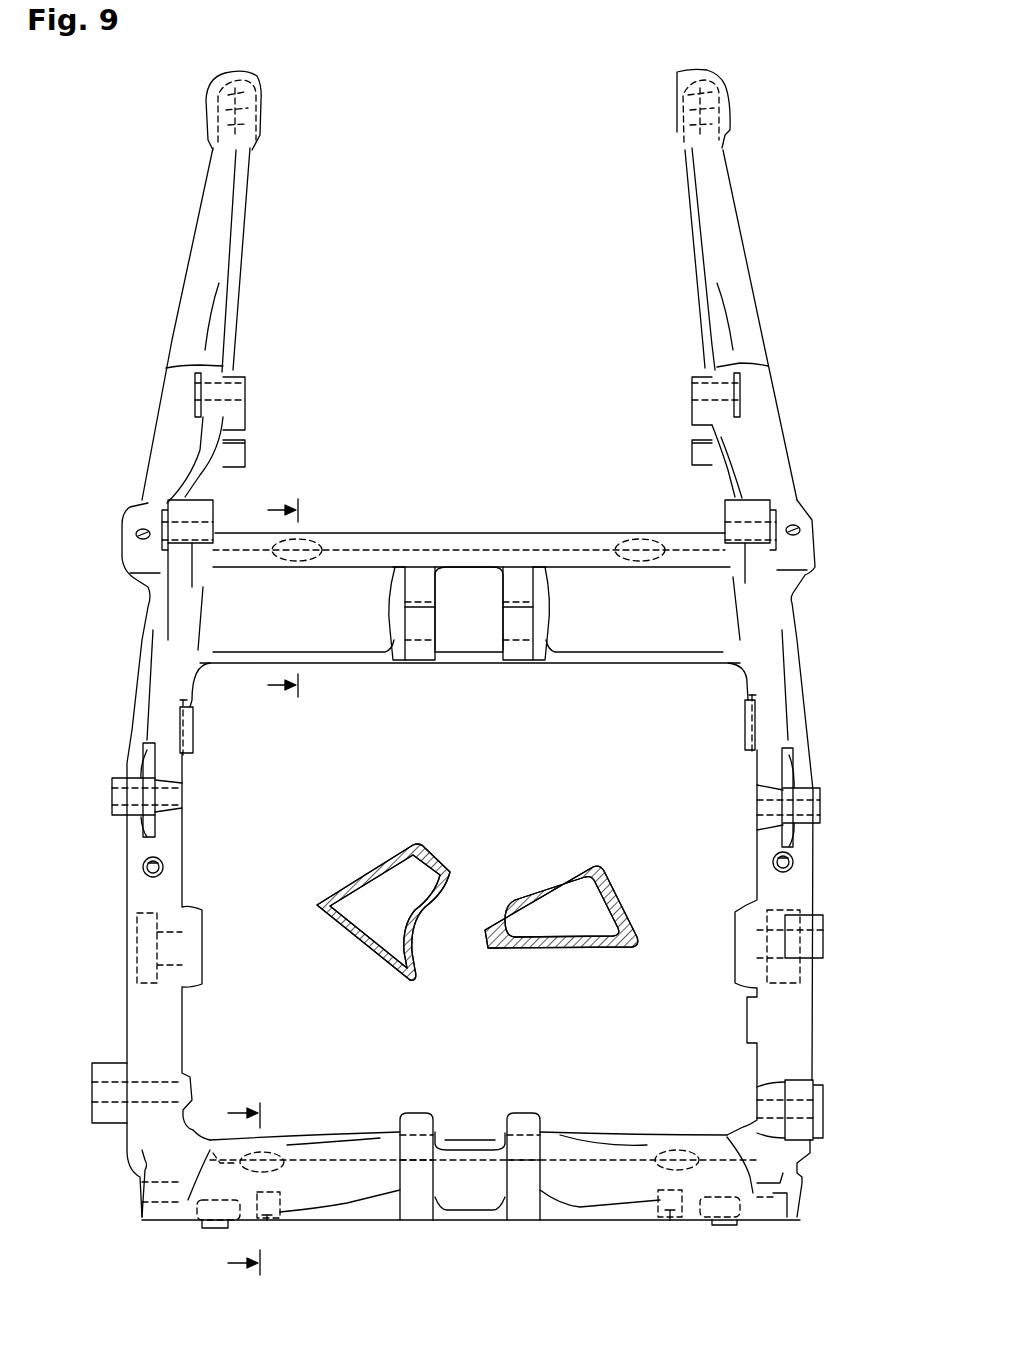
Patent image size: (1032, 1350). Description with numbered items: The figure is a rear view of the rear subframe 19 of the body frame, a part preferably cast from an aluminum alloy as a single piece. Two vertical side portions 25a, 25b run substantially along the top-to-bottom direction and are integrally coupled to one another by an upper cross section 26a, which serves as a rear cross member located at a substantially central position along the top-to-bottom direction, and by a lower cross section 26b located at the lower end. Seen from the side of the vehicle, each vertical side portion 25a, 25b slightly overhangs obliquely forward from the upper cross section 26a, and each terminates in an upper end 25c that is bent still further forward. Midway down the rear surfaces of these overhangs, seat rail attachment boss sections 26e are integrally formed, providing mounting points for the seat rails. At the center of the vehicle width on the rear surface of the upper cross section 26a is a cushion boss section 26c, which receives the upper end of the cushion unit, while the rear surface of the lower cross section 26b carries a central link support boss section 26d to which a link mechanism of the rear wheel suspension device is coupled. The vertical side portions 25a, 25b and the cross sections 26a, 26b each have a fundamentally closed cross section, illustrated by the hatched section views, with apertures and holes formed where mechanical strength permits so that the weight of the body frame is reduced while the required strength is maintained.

The rear subframe 19 is at (838, 347).
The vertical side portion 25a is at (192, 854).
The vertical side portion 25b is at (748, 852).
The upper end 25c is at (258, 83).
The upper cross section (rear cross member) 26a is at (403, 530).
The lower cross section 26b is at (625, 915).
The cushion boss section 26c is at (520, 662).
The link support boss section 26d is at (520, 1113).
The seat rail attachment boss sections 26e is at (195, 392).